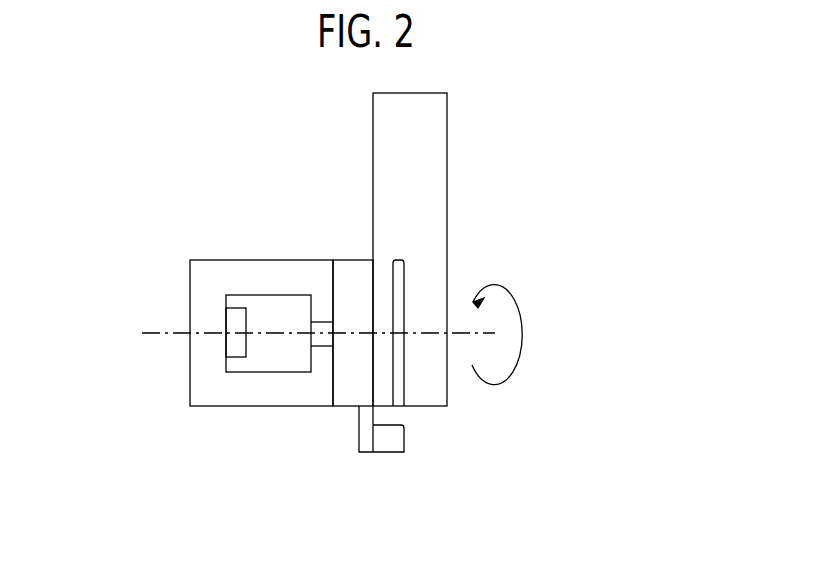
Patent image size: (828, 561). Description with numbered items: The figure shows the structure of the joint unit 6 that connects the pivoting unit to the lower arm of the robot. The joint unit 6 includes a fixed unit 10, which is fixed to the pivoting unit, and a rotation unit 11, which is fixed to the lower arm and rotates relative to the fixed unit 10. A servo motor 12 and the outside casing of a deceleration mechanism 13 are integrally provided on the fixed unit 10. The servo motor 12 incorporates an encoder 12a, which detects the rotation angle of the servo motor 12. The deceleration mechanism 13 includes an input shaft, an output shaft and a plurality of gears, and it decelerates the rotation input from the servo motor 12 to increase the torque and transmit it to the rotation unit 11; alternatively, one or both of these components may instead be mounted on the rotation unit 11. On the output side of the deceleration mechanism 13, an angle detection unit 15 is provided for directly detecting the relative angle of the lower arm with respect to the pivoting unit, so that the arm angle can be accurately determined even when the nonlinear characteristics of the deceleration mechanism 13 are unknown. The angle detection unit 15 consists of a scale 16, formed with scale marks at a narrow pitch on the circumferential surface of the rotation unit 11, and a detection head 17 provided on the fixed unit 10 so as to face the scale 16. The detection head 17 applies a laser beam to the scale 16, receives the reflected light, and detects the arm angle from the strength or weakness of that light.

The joint unit 6 is at (547, 118).
The fixed unit 10 is at (297, 407).
The rotation unit 11 is at (447, 180).
The servo motor 12 is at (273, 295).
The encoder 12a is at (226, 317).
The deceleration mechanism 13 is at (352, 259).
The angle detection unit 15 is at (450, 445).
The scale 16 is at (404, 290).
The detection head 17 is at (392, 453).